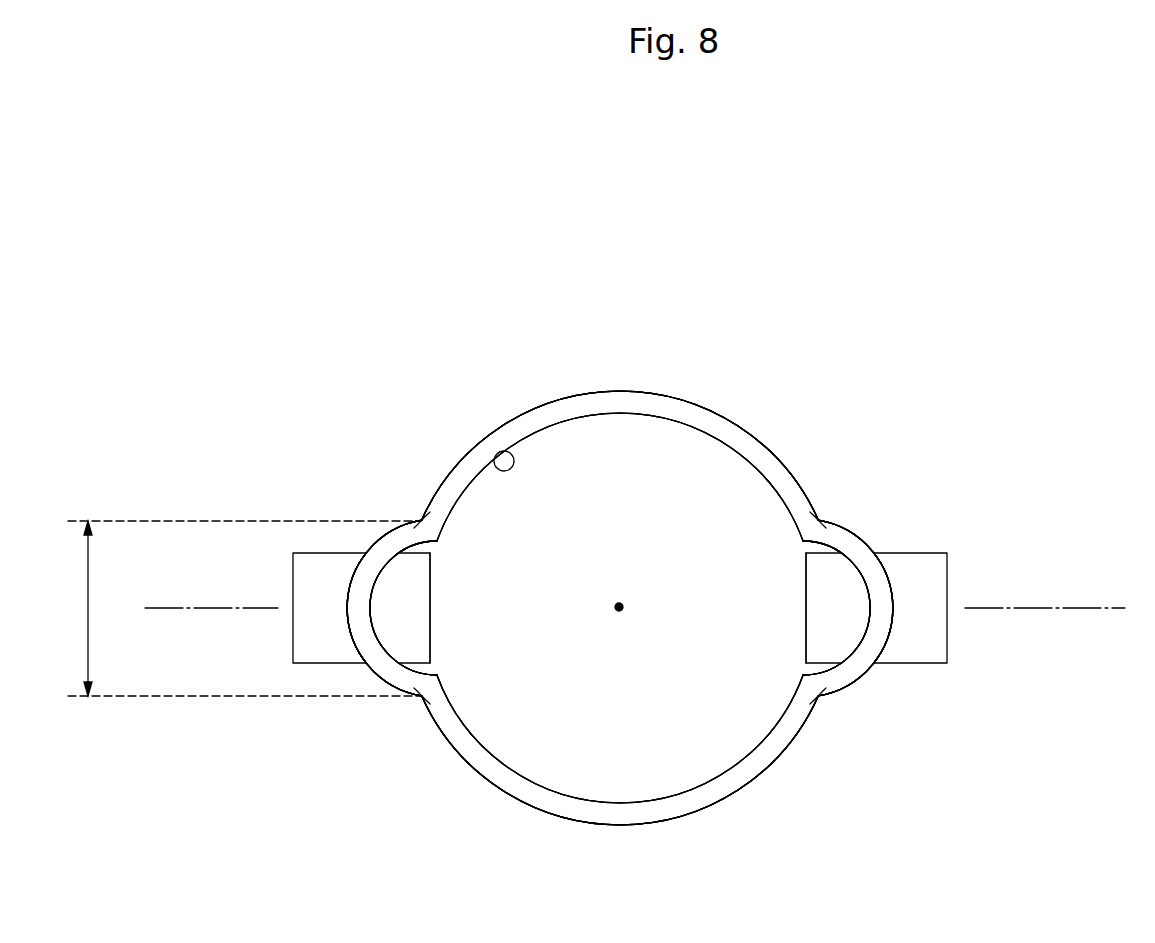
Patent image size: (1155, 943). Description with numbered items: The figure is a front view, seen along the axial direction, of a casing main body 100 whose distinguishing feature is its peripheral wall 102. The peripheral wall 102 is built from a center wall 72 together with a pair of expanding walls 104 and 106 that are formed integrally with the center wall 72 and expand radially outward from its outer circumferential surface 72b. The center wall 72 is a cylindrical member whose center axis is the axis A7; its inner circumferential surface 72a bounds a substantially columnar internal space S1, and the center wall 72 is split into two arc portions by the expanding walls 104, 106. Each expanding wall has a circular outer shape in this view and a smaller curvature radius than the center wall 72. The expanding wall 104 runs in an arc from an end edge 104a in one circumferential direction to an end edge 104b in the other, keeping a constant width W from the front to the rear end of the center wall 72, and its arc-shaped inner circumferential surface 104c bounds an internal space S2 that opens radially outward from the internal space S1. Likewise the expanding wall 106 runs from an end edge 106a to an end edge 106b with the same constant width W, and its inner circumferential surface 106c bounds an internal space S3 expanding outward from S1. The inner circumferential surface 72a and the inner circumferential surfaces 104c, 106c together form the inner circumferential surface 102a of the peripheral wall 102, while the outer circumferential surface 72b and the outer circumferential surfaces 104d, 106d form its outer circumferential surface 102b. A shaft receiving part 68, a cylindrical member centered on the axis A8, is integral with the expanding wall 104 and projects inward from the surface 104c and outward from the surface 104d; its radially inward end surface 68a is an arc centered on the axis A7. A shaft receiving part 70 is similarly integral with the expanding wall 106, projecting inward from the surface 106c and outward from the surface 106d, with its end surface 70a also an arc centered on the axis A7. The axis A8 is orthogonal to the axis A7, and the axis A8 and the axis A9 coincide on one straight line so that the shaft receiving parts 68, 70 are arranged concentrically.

The casing main body 100 is at (836, 245).
The peripheral wall 102 is at (733, 409).
The inner circumferential surface of the peripheral wall 102a is at (499, 453).
The outer circumferential surface of the peripheral wall 102b is at (545, 404).
The center wall 72 is at (619, 397).
The inner circumferential surface of the center wall 72a is at (672, 420).
The outer circumferential surface of the center wall 72b is at (667, 395).
The expanding wall 104 is at (348, 608).
The end edge of the expanding wall 104a is at (421, 519).
The end edge of the expanding wall 104b is at (421, 697).
The inner circumferential surface of the expanding wall 104c is at (378, 580).
The outer circumferential surface of the expanding wall 104d is at (351, 635).
The expanding wall 106 is at (889, 628).
The end edge of the expanding wall 106a is at (820, 519).
The end edge of the expanding wall 106b is at (820, 697).
The inner circumferential surface of the expanding wall 106c is at (853, 567).
The outer circumferential surface of the expanding wall 106d is at (891, 597).
The shaft receiving part 68 is at (320, 576).
The end surface of the shaft receiving part 68a is at (432, 634).
The shaft receiving part 70 is at (915, 572).
The end surface of the shaft receiving part 70a is at (806, 622).
The internal space S1 is at (598, 532).
The internal space S2 is at (413, 619).
The internal space S3 is at (855, 619).
The axis A7 is at (622, 614).
The axis A8 is at (170, 609).
The axis A9 is at (1085, 612).
The width W is at (244, 608).